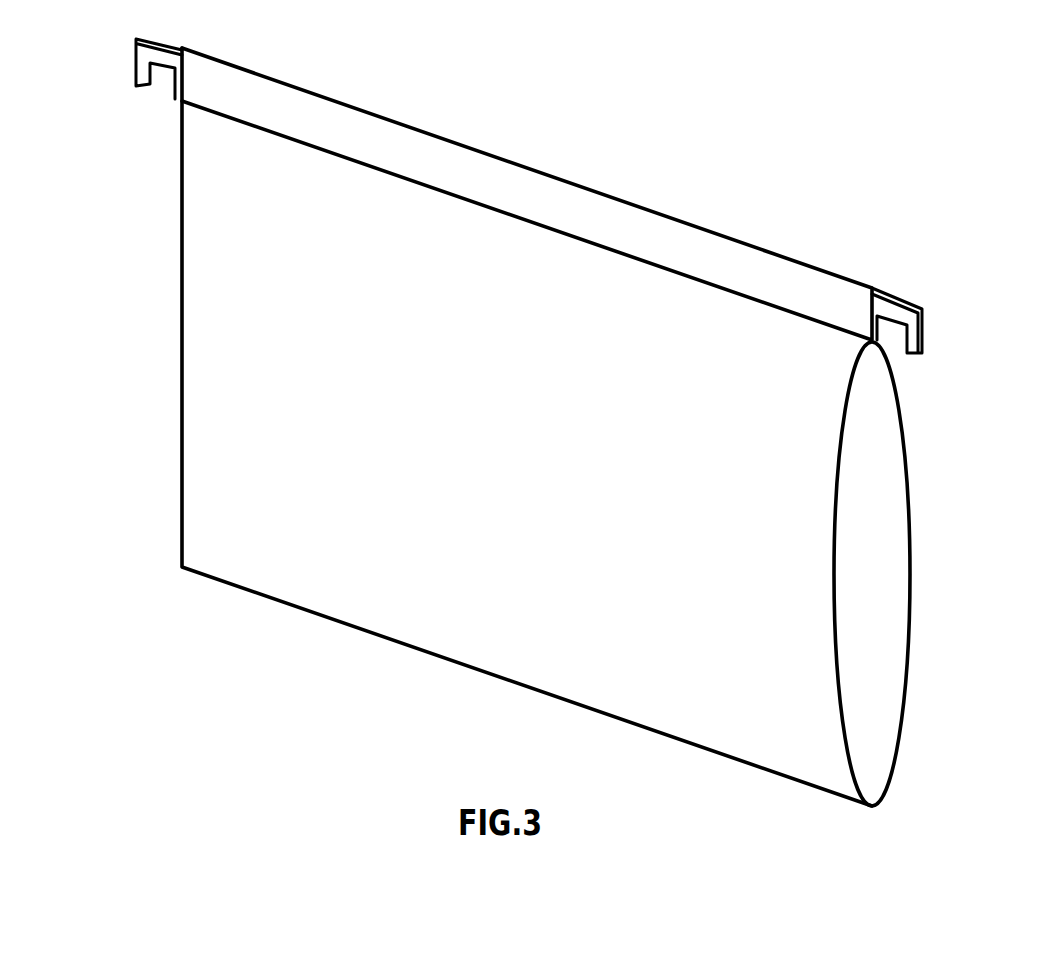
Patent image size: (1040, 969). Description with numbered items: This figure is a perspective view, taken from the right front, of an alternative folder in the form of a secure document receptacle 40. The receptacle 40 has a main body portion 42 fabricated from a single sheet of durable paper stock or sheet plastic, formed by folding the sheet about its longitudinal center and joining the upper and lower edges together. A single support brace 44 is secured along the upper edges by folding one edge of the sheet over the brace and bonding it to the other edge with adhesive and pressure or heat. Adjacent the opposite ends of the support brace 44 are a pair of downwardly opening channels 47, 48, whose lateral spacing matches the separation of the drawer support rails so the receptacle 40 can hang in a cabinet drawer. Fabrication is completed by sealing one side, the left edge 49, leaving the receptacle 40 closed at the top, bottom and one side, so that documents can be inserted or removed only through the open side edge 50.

The secure document receptacle 40 is at (526, 422).
The main body portion 42 is at (242, 427).
The support brace 44 is at (910, 300).
The downwardly opening channel 47 is at (168, 76).
The downwardly opening channel 48 is at (890, 323).
The left edge 49 is at (180, 167).
The open side edge 50 is at (912, 605).